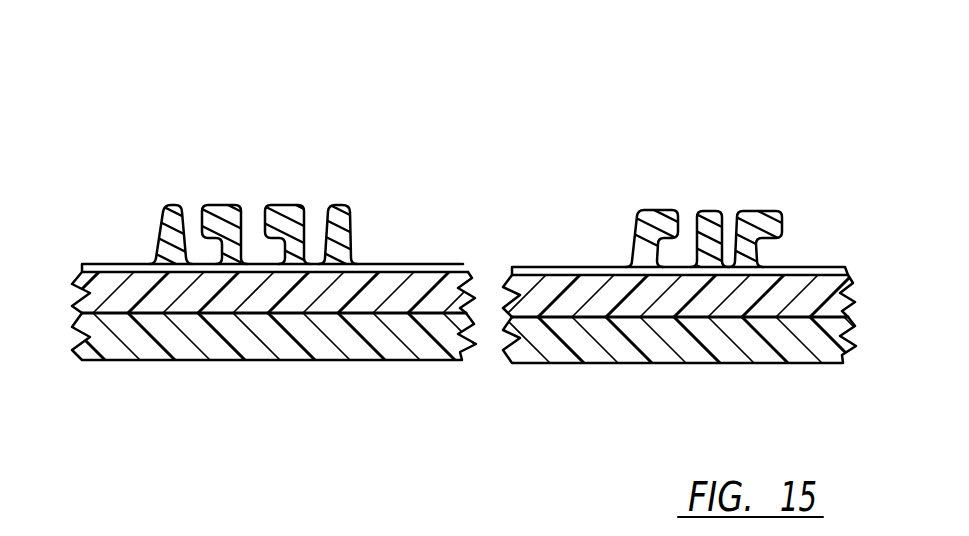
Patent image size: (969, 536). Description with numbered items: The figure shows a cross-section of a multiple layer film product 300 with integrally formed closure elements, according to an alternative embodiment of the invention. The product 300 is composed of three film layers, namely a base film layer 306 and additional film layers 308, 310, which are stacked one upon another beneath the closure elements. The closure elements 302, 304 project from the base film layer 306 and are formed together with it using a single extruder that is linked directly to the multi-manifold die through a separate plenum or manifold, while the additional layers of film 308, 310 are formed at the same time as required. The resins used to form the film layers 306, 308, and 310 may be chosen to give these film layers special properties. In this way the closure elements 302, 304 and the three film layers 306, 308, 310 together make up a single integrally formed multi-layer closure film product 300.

The multiple layer film product 300 is at (238, 113).
The closure element 302 is at (348, 207).
The closure element 304 is at (640, 209).
The base film layer 306 is at (105, 263).
The film layer 308 is at (85, 302).
The film layer 310 is at (258, 362).